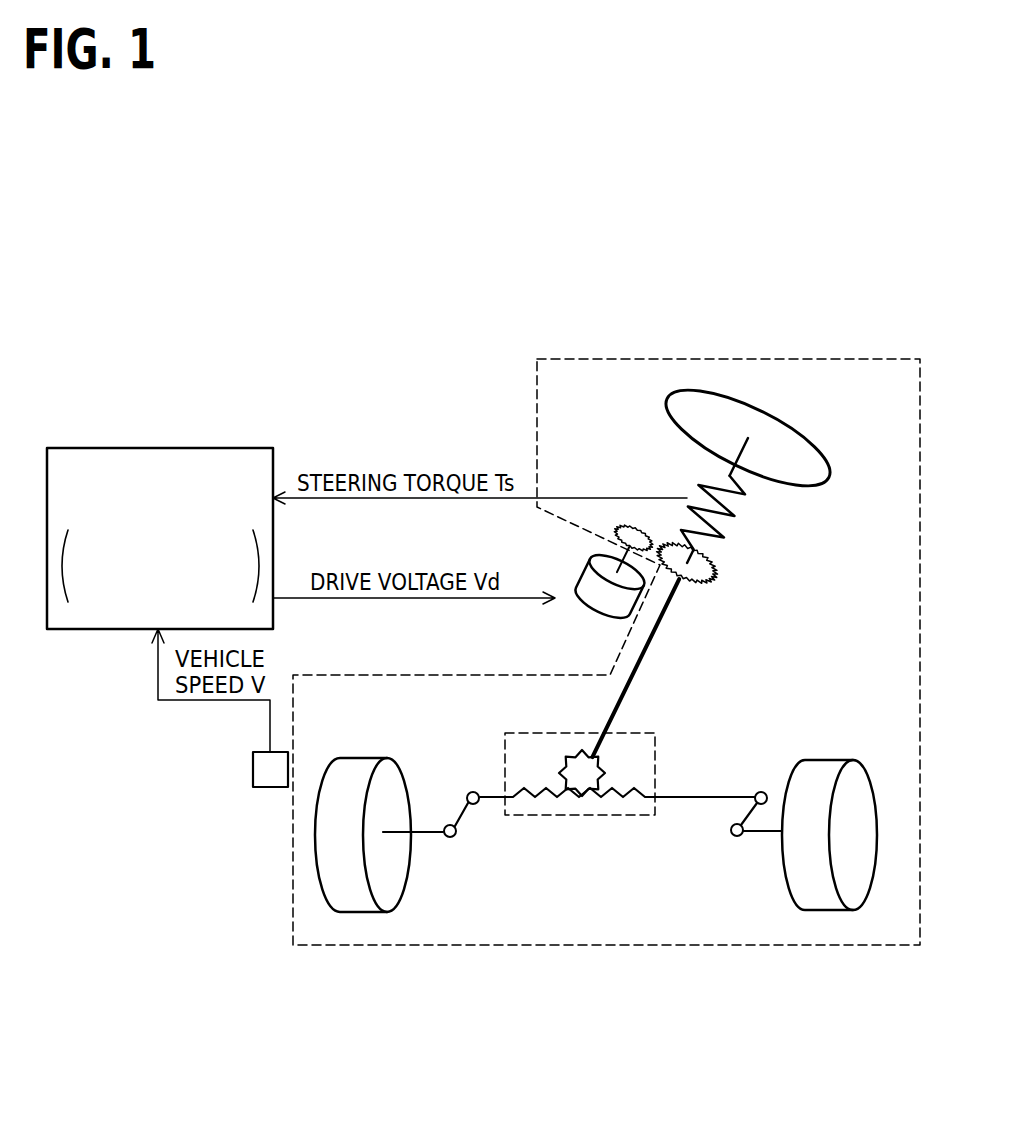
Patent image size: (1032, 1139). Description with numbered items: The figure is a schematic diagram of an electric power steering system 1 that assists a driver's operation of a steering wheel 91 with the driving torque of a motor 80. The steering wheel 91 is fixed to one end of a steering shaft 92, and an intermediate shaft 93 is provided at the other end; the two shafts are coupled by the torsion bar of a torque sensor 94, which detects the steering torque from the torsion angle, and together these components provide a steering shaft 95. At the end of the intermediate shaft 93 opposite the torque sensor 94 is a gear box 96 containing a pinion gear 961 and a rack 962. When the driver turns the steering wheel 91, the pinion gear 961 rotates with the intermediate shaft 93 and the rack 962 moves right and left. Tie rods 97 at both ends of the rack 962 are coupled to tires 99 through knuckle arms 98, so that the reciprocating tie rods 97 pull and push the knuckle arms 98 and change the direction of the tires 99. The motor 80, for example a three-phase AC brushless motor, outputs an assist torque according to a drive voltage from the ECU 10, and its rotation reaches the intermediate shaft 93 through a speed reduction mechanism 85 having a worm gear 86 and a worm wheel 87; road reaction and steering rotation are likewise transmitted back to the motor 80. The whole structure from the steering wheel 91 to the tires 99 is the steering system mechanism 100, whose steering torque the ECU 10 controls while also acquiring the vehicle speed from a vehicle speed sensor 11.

The electric power steering system 1 is at (451, 387).
The ECU 10 is at (160, 448).
The vehicle speed sensor 11 is at (270, 787).
The motor 80 is at (590, 617).
The speed reduction mechanism 85 is at (645, 494).
The worm gear 86 is at (627, 533).
The worm wheel 87 is at (673, 553).
The steering wheel 91 is at (818, 447).
The steering shaft 92 is at (733, 477).
The intermediate shaft 93 is at (677, 600).
The torque sensor 94 is at (747, 517).
The steering shaft 95 is at (744, 597).
The gear box 96 is at (617, 775).
The pinion gear 961 is at (567, 757).
The rack 962 is at (610, 800).
The tie rods 97 is at (488, 800).
The knuckle arms 98 is at (425, 838).
The tires 99 is at (355, 770).
The steering system mechanism 100 is at (727, 358).